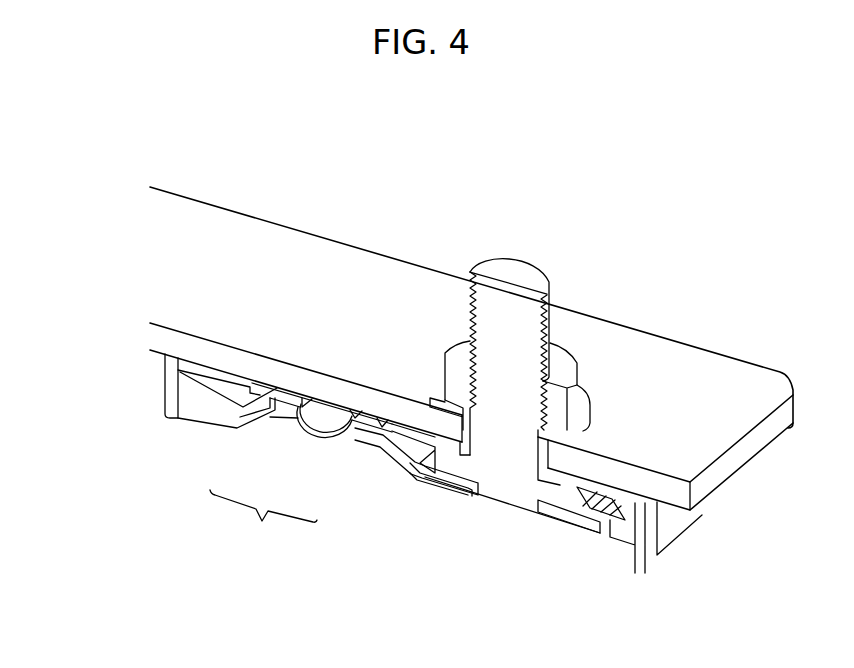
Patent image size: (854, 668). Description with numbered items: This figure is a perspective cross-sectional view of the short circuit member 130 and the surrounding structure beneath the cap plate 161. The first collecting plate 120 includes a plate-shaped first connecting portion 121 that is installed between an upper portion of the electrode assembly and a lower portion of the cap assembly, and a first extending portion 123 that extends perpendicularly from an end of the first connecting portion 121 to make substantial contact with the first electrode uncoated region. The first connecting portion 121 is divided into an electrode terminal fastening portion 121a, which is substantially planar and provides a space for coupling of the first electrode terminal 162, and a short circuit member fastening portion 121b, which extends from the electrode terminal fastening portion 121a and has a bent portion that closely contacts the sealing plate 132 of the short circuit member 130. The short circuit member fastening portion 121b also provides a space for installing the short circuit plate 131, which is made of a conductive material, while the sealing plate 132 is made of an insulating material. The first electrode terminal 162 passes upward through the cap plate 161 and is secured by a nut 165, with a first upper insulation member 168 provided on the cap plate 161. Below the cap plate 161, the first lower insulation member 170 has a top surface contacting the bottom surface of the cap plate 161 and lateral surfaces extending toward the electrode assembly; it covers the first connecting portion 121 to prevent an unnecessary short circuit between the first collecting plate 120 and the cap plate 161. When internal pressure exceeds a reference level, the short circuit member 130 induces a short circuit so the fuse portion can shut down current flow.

The first collecting plate 120 is at (652, 563).
The first connecting portion 121 is at (454, 562).
The electrode terminal fastening portion 121a is at (432, 478).
The short circuit member fastening portion 121b is at (392, 453).
The first extending portion 123 is at (635, 556).
The short circuit member 130 is at (263, 521).
The short circuit plate 131 is at (300, 428).
The sealing plate 132 is at (352, 423).
The cap plate 161 is at (322, 253).
The first electrode terminal 162 is at (520, 270).
The nut 165 is at (563, 357).
The first upper insulation member 168 is at (583, 417).
The first lower insulation member 170 is at (165, 396).